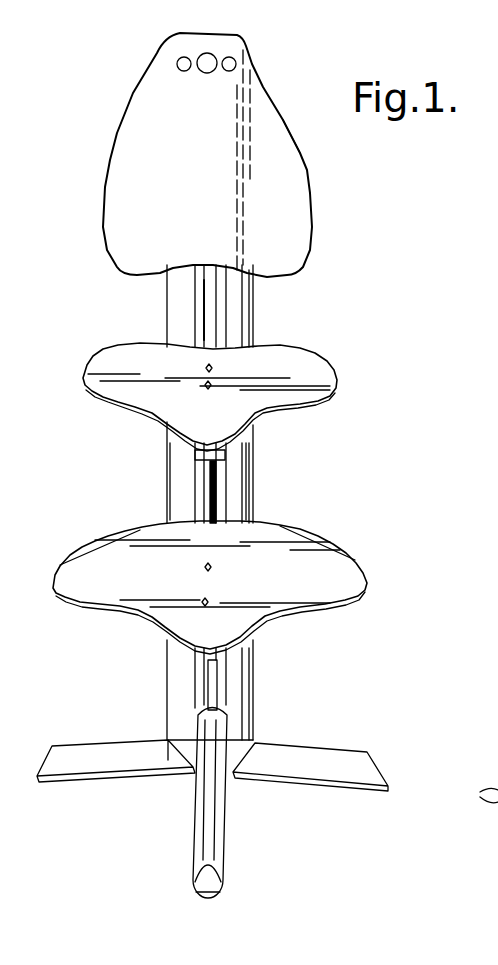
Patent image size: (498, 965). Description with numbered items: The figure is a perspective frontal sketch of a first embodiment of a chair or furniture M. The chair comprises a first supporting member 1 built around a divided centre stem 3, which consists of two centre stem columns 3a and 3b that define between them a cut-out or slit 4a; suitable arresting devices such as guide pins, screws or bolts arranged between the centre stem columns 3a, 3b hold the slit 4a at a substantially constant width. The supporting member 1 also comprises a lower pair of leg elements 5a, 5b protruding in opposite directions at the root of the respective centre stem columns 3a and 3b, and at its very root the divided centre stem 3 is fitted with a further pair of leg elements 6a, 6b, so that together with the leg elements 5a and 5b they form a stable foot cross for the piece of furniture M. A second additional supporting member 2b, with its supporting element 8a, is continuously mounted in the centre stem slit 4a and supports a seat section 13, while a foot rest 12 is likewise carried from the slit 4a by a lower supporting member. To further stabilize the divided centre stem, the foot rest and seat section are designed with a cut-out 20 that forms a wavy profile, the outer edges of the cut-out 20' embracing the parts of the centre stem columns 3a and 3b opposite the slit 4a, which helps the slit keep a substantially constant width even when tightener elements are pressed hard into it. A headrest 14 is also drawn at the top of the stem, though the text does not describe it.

The first supporting member 1 is at (322, 736).
The chair or furniture M is at (286, 99).
The headrest 14 is at (123, 225).
The divided centre stem 3 is at (205, 297).
The slit 4a is at (207, 319).
The centre stem column 3a is at (178, 482).
The centre stem column 3b is at (240, 482).
The second additional supporting member 2b is at (192, 454).
The supporting element 8a is at (220, 454).
The seat section 13 is at (322, 371).
The foot rest 12 is at (115, 580).
The cut-out 20 is at (112, 535).
The outer edges of the cut-out 20' is at (314, 530).
The leg element 6b is at (214, 690).
The leg element 5a is at (88, 757).
The leg element 5b is at (347, 758).
The leg element 6a is at (222, 856).